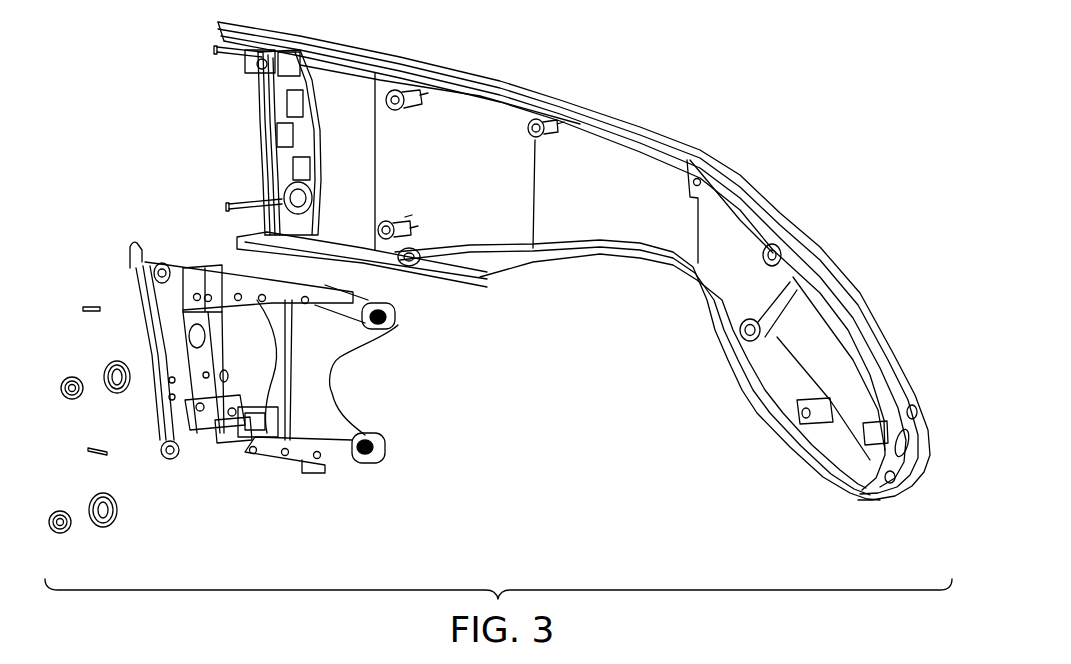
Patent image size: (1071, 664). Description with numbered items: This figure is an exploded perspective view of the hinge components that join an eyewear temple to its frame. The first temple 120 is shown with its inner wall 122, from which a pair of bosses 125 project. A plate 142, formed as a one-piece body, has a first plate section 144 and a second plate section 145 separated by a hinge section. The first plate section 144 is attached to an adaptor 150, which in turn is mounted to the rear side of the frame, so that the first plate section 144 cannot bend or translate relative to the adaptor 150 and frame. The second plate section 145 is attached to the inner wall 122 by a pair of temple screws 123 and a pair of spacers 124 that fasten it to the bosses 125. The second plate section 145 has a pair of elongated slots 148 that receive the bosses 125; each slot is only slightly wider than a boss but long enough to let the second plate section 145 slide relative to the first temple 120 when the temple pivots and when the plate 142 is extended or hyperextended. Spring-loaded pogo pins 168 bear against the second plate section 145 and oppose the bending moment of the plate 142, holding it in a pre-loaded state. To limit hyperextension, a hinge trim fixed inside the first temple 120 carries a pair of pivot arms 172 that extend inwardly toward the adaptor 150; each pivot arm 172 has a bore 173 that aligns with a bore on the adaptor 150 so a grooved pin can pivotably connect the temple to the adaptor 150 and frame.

The first temple 120 is at (623, 120).
The inner wall 122 is at (427, 150).
The temple screws 123 is at (70, 375).
The spacers 124 is at (113, 360).
The bosses 125 is at (397, 88).
The plate 142 is at (313, 400).
The first plate section 144 is at (273, 318).
The second plate section 145 is at (347, 333).
The elongated slots 148 is at (397, 318).
The adaptor 150 is at (203, 423).
The pogo pin 168 is at (92, 307).
The pivot arms 172 is at (228, 49).
The bore 173 is at (221, 52).